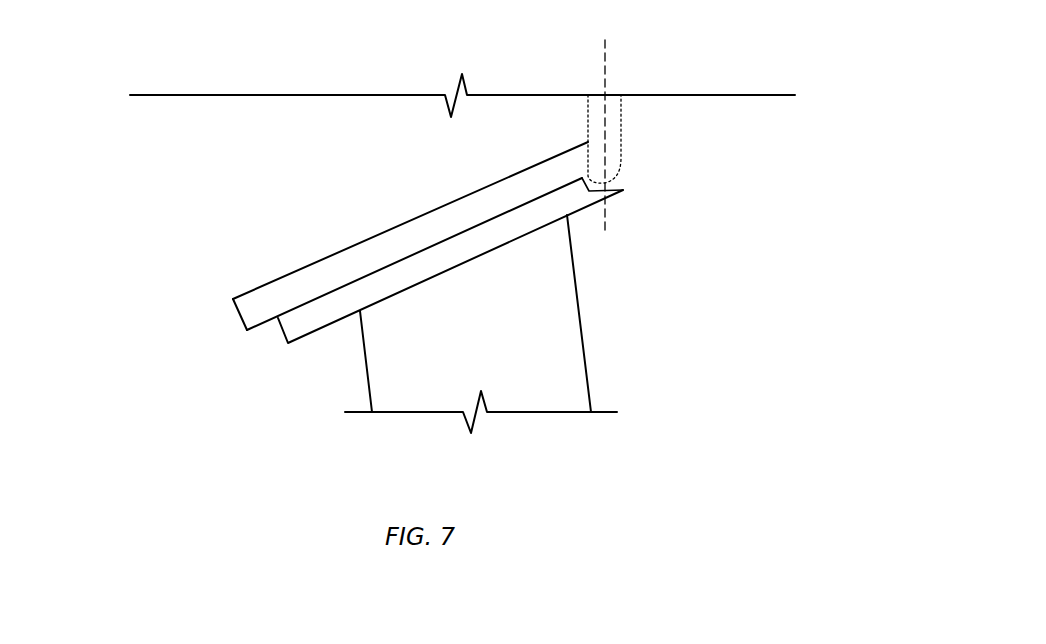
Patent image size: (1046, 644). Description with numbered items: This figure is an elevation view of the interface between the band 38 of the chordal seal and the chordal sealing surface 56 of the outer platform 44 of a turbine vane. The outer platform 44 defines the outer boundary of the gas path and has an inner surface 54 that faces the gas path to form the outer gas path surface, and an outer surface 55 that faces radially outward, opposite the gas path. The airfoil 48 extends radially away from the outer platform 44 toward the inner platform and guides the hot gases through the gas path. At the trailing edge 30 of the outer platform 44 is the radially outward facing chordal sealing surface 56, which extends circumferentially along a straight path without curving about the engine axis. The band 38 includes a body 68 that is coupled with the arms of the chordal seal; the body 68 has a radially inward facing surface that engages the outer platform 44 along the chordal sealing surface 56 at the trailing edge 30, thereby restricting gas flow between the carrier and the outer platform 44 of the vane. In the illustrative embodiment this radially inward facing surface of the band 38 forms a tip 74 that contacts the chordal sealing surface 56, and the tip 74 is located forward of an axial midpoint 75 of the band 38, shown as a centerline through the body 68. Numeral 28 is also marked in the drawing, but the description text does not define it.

The post 28 is at (367, 377).
The trailing edge 30 is at (590, 389).
The band 38 is at (667, 150).
The outer platform 44 is at (220, 298).
The airfoil 48 is at (588, 348).
The inner surface 54 is at (325, 330).
The outer surface 55 is at (325, 264).
The chordal sealing surface 56 is at (628, 188).
The body 68 is at (622, 143).
The tip 74 is at (588, 208).
The axial midpoint 75 is at (607, 93).